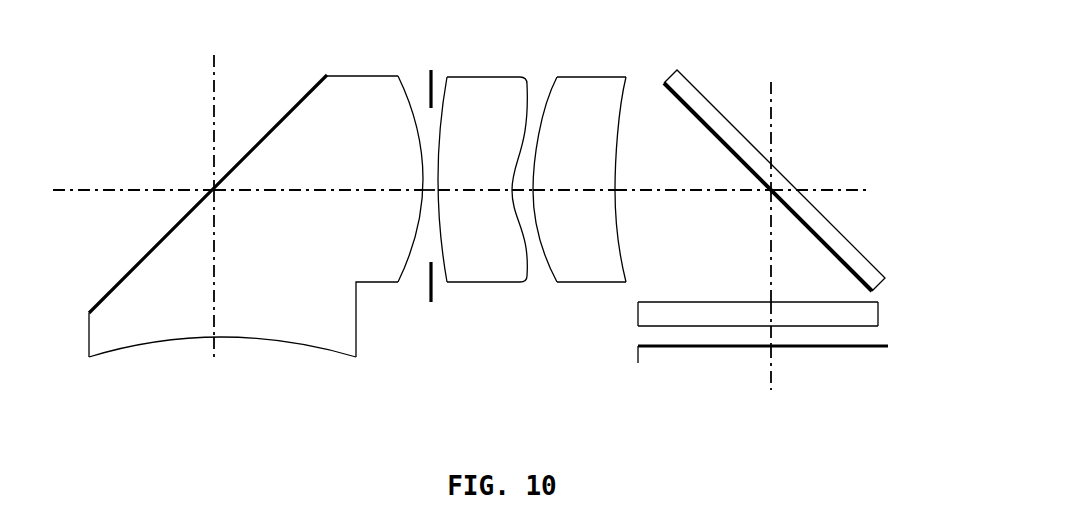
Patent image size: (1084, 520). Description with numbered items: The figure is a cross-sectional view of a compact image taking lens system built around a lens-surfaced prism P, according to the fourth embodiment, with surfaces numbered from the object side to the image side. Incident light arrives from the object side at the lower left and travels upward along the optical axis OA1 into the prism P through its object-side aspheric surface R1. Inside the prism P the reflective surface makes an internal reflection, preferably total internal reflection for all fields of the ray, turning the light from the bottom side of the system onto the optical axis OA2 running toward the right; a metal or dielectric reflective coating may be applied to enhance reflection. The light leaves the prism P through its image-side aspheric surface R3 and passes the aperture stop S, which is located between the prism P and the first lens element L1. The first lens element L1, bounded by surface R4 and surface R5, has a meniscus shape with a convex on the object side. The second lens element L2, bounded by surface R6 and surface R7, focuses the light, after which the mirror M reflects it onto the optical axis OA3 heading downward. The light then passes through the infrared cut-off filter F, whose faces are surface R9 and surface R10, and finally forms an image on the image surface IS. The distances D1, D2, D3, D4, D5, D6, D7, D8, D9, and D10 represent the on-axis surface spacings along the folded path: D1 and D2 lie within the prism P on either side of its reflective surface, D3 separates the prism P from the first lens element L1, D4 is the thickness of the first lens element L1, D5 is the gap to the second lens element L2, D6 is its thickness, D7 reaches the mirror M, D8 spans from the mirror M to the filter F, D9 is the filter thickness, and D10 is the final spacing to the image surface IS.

The lens-surfaced prism P is at (235, 245).
The surface 1 R1 is at (150, 348).
The surface 3 R3 is at (422, 167).
The aperture stop S is at (431, 307).
The first lens element L1 is at (466, 205).
The surface 4 R4 is at (447, 88).
The surface 5 R5 is at (512, 167).
The second lens element L2 is at (602, 205).
The surface 6 R6 is at (550, 88).
The surface 7 R7 is at (618, 150).
The mirror M is at (774, 172).
The infrared cut-off filter F is at (756, 320).
The surface 9 R9 is at (690, 302).
The surface 10 R10 is at (708, 325).
The image surface IS is at (835, 347).
The optical axis OA1 is at (214, 348).
The optical axis OA2 is at (122, 192).
The optical axis OA3 is at (771, 365).
The distance D1 is at (214, 270).
The distance D2 is at (303, 195).
The distance D3 is at (420, 190).
The distance D4 is at (468, 190).
The distance D5 is at (522, 190).
The distance D6 is at (569, 190).
The distance D7 is at (675, 192).
The distance D8 is at (775, 243).
The distance D9 is at (772, 313).
The distance D10 is at (772, 332).